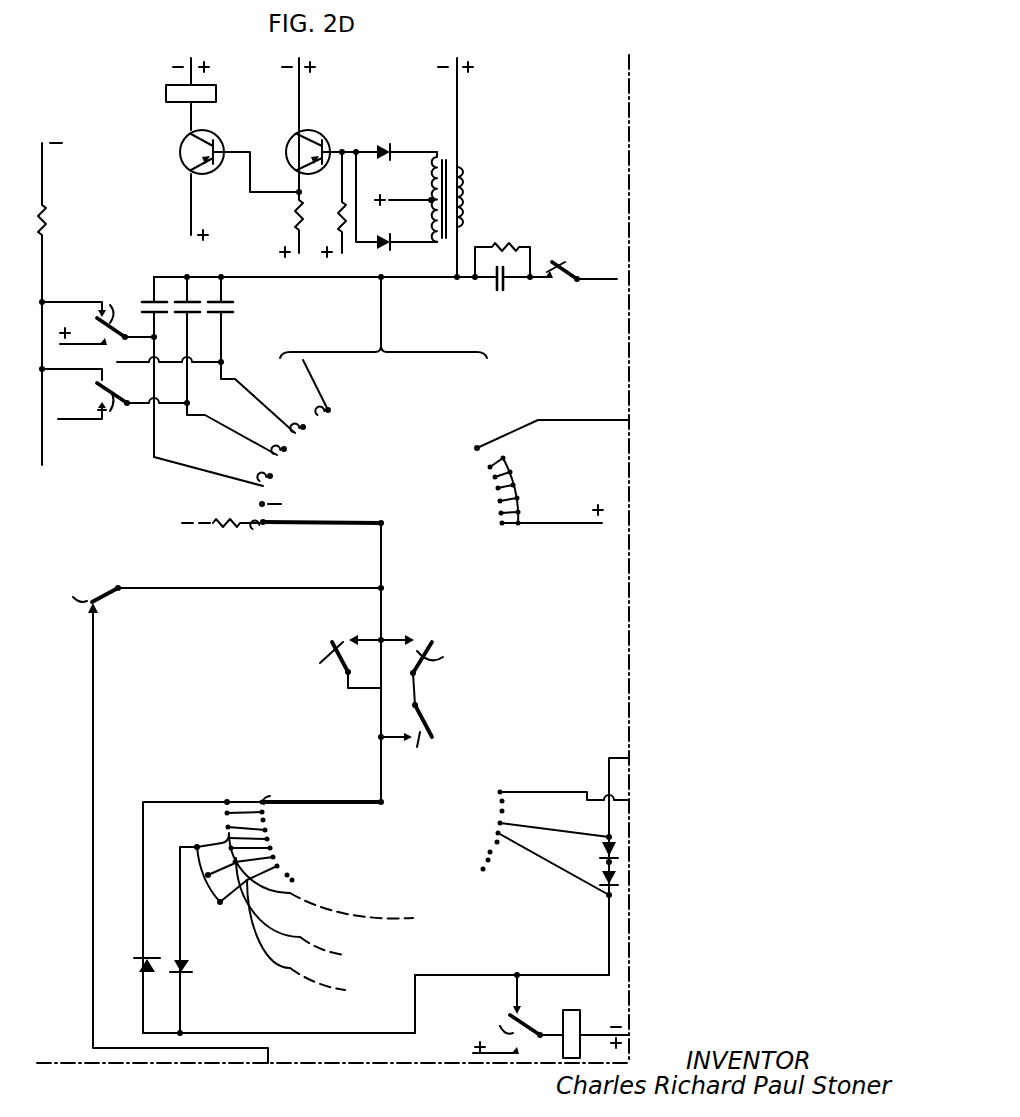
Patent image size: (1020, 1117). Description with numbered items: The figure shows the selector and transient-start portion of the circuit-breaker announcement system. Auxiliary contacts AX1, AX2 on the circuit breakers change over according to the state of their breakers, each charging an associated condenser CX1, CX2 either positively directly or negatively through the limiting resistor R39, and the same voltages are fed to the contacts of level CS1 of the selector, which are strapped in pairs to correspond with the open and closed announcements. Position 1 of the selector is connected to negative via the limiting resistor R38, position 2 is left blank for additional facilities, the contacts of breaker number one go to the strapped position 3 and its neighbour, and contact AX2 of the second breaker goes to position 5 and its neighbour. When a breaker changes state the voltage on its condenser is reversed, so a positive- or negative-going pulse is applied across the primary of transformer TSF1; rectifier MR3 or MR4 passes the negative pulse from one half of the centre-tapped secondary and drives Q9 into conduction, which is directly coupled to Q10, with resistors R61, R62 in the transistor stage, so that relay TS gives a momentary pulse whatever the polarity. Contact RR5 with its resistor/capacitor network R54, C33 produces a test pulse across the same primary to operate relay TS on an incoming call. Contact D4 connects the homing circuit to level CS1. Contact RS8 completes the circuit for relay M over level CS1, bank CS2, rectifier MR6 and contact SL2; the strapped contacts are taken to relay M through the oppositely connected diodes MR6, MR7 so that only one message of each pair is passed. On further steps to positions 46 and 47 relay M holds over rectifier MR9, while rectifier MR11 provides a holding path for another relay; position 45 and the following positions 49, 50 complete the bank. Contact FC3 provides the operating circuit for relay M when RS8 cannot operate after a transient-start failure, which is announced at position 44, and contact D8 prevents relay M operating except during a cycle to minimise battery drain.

The relay TS is at (216, 92).
The transistor Q10 is at (216, 133).
The transistor Q9 is at (316, 131).
The resistor R61 is at (293, 221).
The resistor R62 is at (337, 221).
The rectifier MR3 is at (404, 134).
The rectifier MR4 is at (391, 247).
The transformer TSF1 is at (459, 167).
The limiting resistor R39 is at (48, 222).
The auxiliary contact AX1 is at (98, 308).
The auxiliary contact AX2 is at (114, 407).
The condenser CX1 is at (160, 300).
The condenser CX2 is at (199, 301).
The selector level CS1 is at (459, 466).
The selector position 5 is at (287, 455).
The selector position 3 is at (272, 482).
The selector position 2 is at (281, 507).
The selector position 1 is at (315, 536).
The limiting resistor R38 is at (228, 534).
The selector position 44 is at (483, 869).
The switch contact 50 is at (500, 791).
The relay contact D4 is at (223, 592).
The relay contact RS8 is at (329, 667).
The relay contact FC3 is at (444, 673).
The relay contact D8 is at (409, 739).
The selector bank CS2 is at (411, 891).
The switch contact 49 is at (500, 801).
The selector position 47 is at (500, 823).
The selector position 46 is at (497, 833).
The selector position 45 is at (497, 843).
The rectifier MR11 is at (612, 846).
The rectifier MR9 is at (612, 880).
The rectifier MR6 is at (153, 966).
The rectifier MR7 is at (191, 968).
The relay contact SL2 is at (503, 1014).
The relay M is at (579, 996).
The resistor R54 is at (517, 240).
The capacitor C33 is at (504, 290).
The relay contact RR5 is at (616, 276).